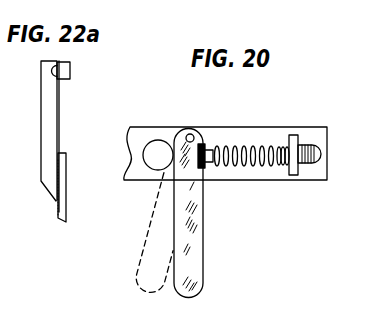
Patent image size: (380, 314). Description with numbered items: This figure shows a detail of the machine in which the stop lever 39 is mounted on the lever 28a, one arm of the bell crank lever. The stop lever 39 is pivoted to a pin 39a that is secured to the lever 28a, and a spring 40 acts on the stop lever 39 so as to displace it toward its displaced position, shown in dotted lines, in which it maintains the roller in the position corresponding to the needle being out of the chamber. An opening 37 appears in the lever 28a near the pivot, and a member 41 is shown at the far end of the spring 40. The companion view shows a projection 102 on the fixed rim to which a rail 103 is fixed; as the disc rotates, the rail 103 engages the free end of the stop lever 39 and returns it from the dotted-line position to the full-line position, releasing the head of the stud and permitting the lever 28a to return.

In FIG. 22a, the projection 102 is at (43, 133).
In FIG. 22a, the rail 103 is at (70, 70).
In FIG. 20, the lever 28a is at (131, 171).
In FIG. 20, the aperture 37 is at (157, 152).
In FIG. 20, the stop lever 39 is at (195, 262).
In FIG. 20, the pin 39a is at (190, 133).
In FIG. 20, the spring 40 is at (253, 166).
In FIG. 20, the adjustment screw 41 is at (294, 135).